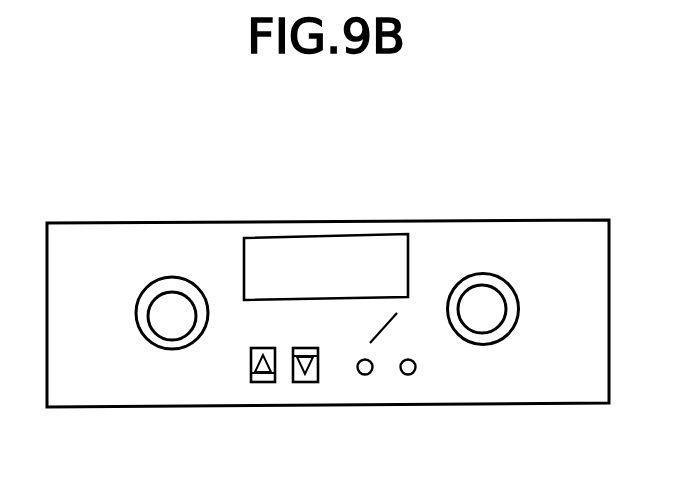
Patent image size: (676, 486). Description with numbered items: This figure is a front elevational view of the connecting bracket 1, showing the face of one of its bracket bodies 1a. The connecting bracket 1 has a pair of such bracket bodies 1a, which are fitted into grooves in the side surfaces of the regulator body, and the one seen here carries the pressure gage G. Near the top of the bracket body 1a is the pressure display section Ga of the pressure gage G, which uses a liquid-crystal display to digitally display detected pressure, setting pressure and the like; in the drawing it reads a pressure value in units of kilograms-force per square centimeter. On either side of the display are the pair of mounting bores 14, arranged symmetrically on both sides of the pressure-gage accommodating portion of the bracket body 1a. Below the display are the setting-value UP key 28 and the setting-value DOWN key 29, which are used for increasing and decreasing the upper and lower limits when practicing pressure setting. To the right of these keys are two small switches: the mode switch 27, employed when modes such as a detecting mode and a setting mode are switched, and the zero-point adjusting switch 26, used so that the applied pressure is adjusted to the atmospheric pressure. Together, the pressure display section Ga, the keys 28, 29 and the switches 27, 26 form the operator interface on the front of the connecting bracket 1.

The connecting bracket 1 is at (530, 211).
The bracket body 1a is at (155, 245).
The pressure gage G is at (296, 215).
The pressure display section Ga is at (392, 250).
The mounting bore 14 is at (168, 320).
The setting-value UP key 28 is at (261, 382).
The setting-value DOWN key 29 is at (303, 382).
The mode switch 27 is at (365, 375).
The zero-point adjusting switch 26 is at (408, 375).